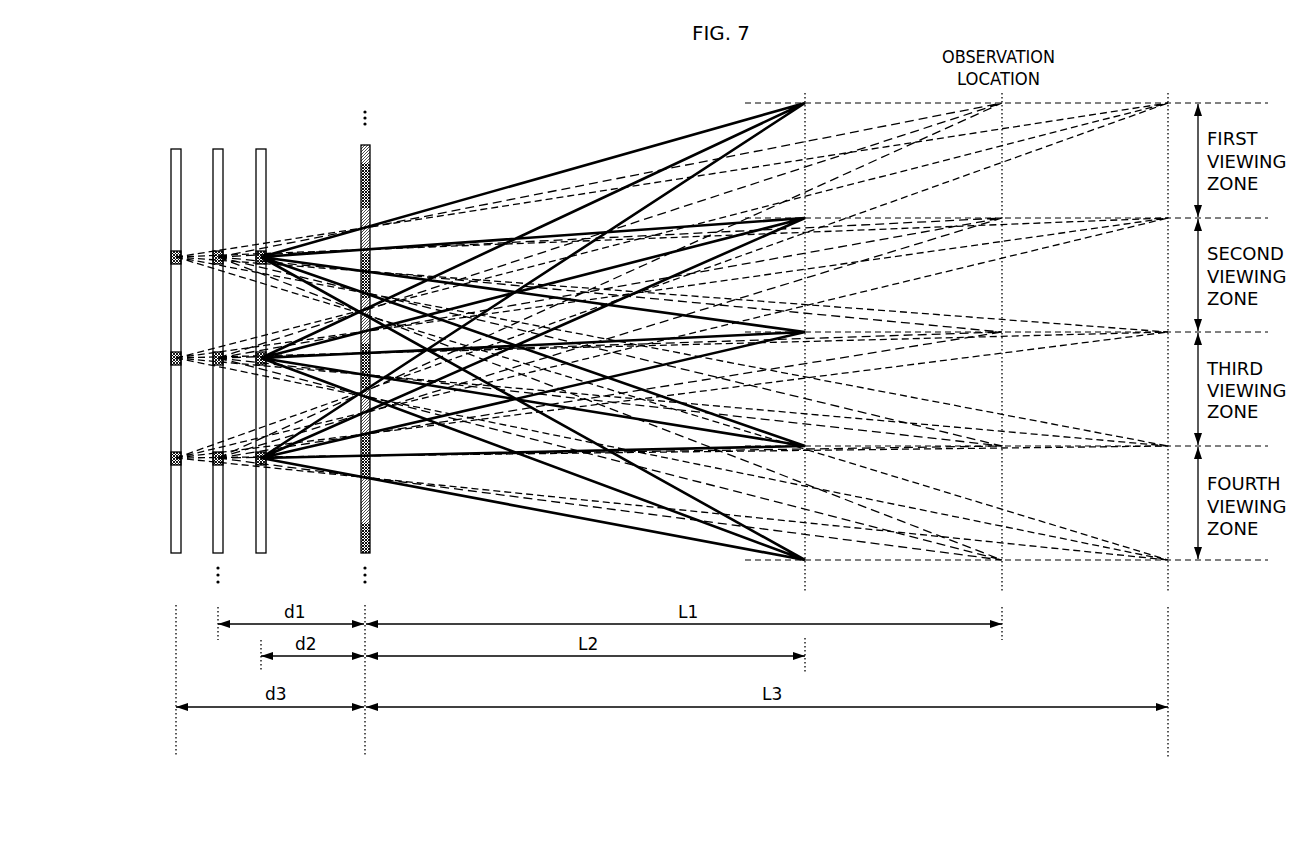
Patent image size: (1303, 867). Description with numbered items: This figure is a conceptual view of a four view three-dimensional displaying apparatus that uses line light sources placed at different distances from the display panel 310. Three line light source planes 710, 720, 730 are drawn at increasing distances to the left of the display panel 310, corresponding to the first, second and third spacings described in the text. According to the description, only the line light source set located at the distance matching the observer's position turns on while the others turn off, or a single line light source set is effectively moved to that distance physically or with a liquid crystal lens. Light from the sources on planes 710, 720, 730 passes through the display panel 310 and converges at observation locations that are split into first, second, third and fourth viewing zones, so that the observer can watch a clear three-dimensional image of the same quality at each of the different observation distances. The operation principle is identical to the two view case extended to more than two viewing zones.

The first light source plane 710 is at (176, 337).
The second light source plane 720 is at (218, 337).
The third light source plane 730 is at (261, 337).
The display panel 310 is at (365, 317).